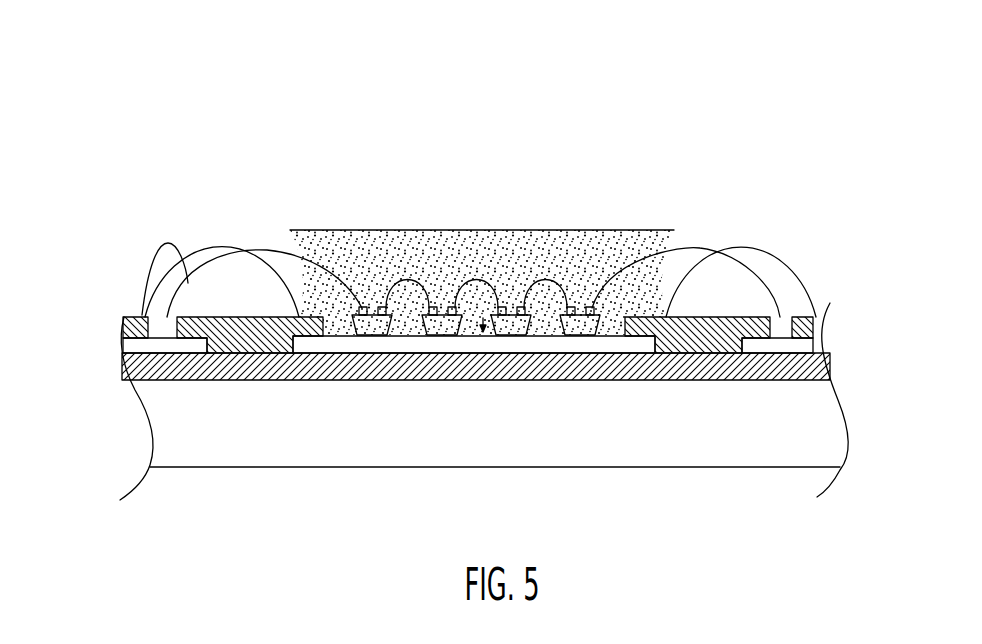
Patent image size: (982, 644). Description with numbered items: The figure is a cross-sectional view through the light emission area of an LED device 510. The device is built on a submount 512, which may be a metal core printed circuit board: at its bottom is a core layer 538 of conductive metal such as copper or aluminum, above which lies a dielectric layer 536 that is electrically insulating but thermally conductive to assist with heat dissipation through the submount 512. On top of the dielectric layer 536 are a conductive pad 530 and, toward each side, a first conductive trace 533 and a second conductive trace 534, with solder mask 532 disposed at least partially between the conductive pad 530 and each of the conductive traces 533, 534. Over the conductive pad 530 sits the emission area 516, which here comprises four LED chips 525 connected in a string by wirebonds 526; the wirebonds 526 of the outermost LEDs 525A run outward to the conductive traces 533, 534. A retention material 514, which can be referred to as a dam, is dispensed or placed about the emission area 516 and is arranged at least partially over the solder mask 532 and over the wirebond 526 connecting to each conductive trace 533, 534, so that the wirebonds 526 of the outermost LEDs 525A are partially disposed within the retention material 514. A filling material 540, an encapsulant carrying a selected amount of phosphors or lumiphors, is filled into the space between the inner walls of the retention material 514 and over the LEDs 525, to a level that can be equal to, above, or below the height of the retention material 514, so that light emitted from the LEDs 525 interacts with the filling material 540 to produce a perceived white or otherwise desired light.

The LED device 510 is at (297, 108).
The submount 512 is at (117, 317).
The retention material 514 is at (183, 223).
The emission area 516 is at (522, 176).
The LED chips 525 is at (437, 281).
The outermost LEDs 525A is at (362, 325).
The wirebond 526 is at (373, 258).
The conductive pad 530 is at (365, 340).
The solder mask 532 is at (136, 314).
The first conductive trace 533 is at (170, 347).
The second conductive trace 534 is at (793, 340).
The dielectric layer 536 is at (478, 370).
The core layer 538 is at (600, 452).
The filling material 540 is at (627, 226).